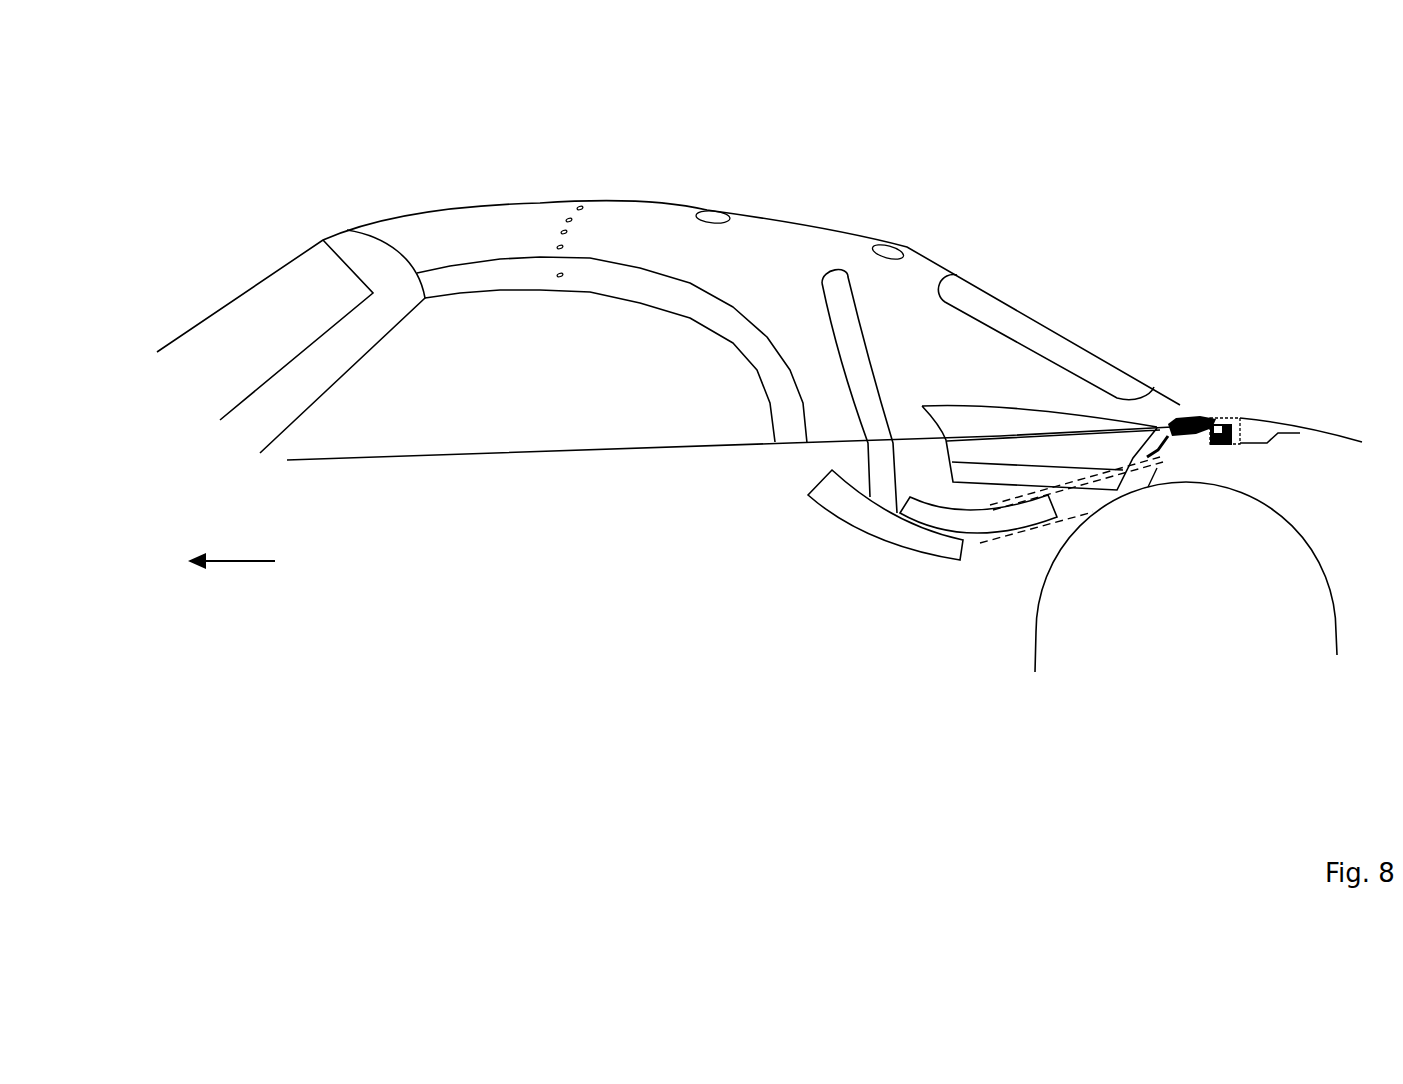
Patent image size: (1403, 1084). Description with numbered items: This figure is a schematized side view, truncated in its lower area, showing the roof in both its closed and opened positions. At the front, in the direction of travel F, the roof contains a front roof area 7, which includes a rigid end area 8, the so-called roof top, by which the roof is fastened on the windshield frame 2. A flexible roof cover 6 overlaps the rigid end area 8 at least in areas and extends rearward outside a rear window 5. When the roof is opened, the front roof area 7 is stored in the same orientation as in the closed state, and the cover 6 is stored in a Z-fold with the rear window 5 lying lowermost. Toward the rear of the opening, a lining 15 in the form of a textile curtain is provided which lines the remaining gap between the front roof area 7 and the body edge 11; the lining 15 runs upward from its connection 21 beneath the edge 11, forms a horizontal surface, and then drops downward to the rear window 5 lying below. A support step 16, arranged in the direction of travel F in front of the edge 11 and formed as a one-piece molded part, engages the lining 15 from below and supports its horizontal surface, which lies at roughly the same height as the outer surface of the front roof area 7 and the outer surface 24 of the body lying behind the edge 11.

The windshield frame 2 is at (350, 234).
The rear window 5 is at (1033, 325).
The flexible roof cover 6 is at (768, 210).
The front roof area 7 is at (491, 175).
The rigid end area 8 is at (481, 283).
The edge 11 is at (1216, 410).
The lining 15 is at (1180, 413).
The support step 16 is at (1205, 430).
The connection 21 is at (1233, 420).
The outer surface of body 24 is at (1288, 422).
The direction of travel F is at (230, 560).